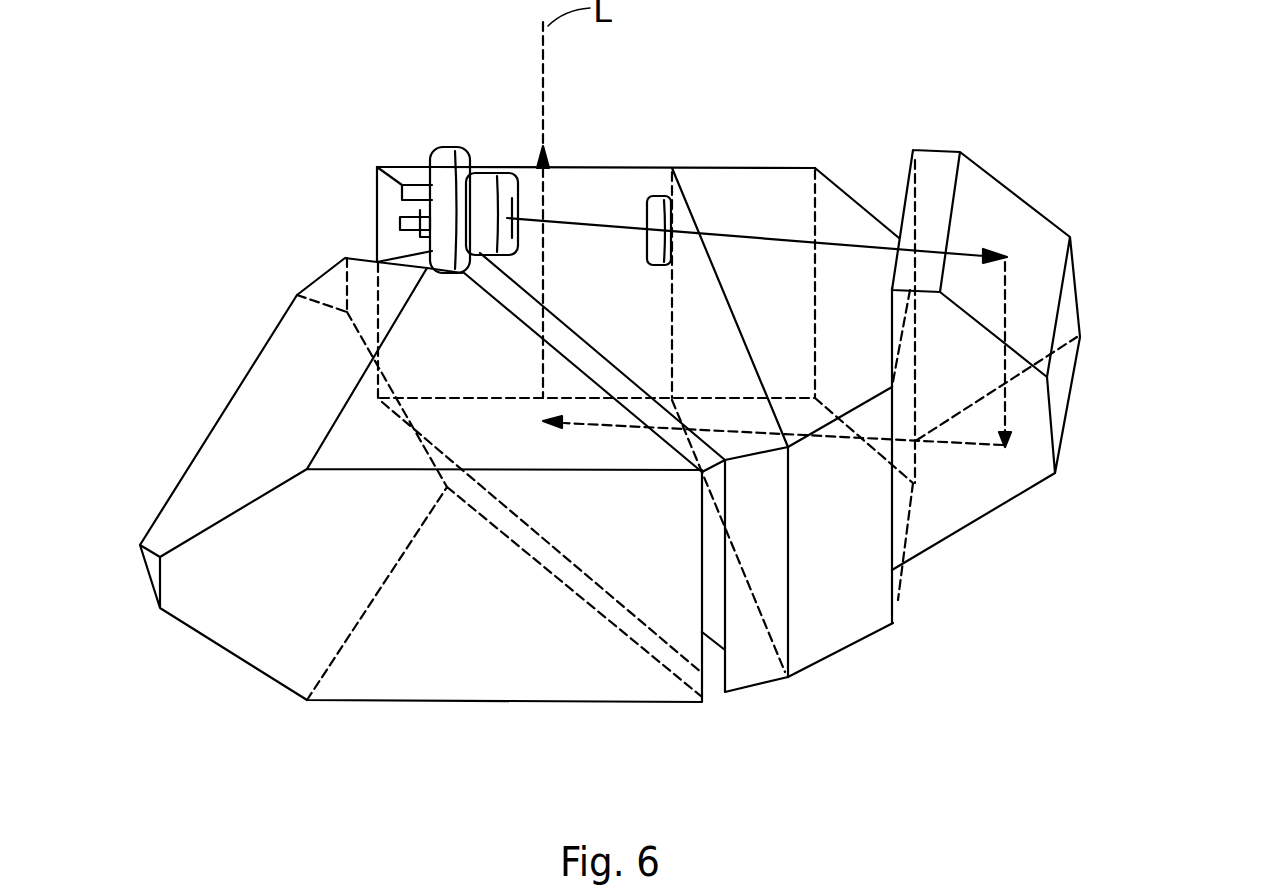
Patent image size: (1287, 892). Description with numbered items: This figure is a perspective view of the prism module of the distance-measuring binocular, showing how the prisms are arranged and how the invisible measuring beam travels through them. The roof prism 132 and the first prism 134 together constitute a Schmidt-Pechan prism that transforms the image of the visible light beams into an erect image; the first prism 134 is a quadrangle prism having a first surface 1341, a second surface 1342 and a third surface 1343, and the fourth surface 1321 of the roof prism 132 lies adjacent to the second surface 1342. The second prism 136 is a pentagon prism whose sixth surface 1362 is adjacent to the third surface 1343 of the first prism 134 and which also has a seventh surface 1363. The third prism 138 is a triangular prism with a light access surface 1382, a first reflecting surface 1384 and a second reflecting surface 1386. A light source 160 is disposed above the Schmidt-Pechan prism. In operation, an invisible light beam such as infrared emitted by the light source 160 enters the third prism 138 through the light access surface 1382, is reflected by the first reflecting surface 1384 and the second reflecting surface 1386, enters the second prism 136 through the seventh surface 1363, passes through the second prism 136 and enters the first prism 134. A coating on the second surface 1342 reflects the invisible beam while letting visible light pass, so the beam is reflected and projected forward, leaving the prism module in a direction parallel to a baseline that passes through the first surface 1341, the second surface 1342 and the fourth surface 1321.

The roof prism 132 is at (408, 657).
The fourth surface 1321 is at (727, 648).
The first prism 134 is at (602, 187).
The first surface 1341 is at (397, 163).
The second surface 1342 is at (713, 575).
The third surface 1343 is at (787, 508).
The second prism 136 is at (750, 194).
The sixth surface 1362 is at (788, 575).
The seventh surface 1363 is at (893, 582).
The third prism 138 is at (1034, 160).
The light access surface 1382 is at (890, 342).
The first reflecting surface 1384 is at (1027, 317).
The second reflecting surface 1386 is at (950, 480).
The light source 160 is at (481, 177).